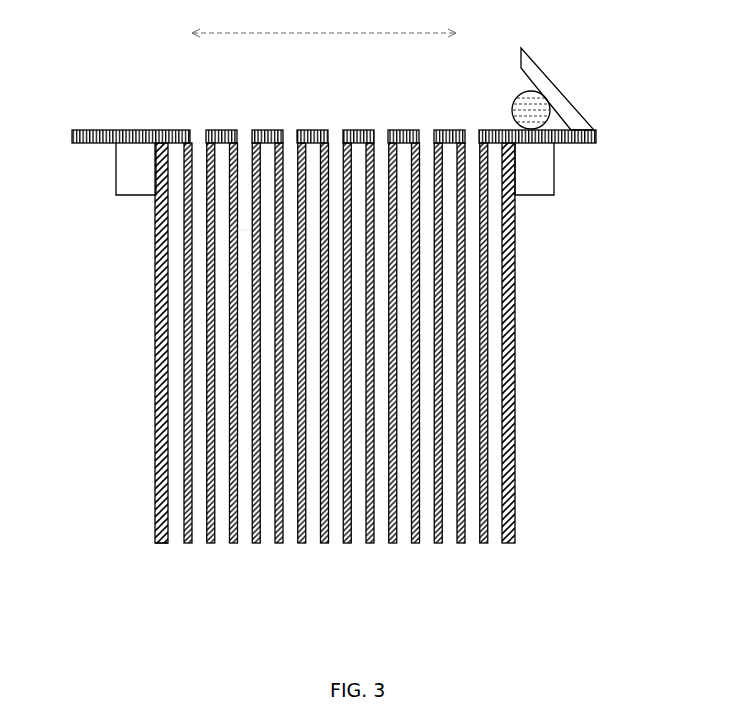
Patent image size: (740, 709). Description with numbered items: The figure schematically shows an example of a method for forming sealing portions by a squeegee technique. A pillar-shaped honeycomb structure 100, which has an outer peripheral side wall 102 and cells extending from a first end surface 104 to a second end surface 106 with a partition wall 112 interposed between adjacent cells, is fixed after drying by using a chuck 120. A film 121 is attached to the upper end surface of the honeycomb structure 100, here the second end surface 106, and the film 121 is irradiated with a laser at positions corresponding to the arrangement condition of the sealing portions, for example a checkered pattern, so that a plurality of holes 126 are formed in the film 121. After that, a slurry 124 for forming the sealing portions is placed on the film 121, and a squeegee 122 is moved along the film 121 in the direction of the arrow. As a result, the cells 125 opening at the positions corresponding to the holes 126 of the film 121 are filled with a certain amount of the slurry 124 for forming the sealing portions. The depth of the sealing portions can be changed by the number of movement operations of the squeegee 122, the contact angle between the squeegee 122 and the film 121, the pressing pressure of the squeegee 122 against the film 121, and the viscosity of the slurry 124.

The pillar-shaped honeycomb structure 100 is at (592, 235).
The outer peripheral side wall 102 is at (155, 450).
The first end surface 104 is at (159, 545).
The second end surface 106 is at (199, 133).
The partition wall 112 is at (184, 293).
The chuck 120 is at (116, 168).
The film 121 is at (104, 130).
The squeegee 122 is at (568, 100).
The slurry for forming the sealing portions 124 is at (512, 103).
The cells 125 is at (247, 230).
The holes 126 is at (288, 136).